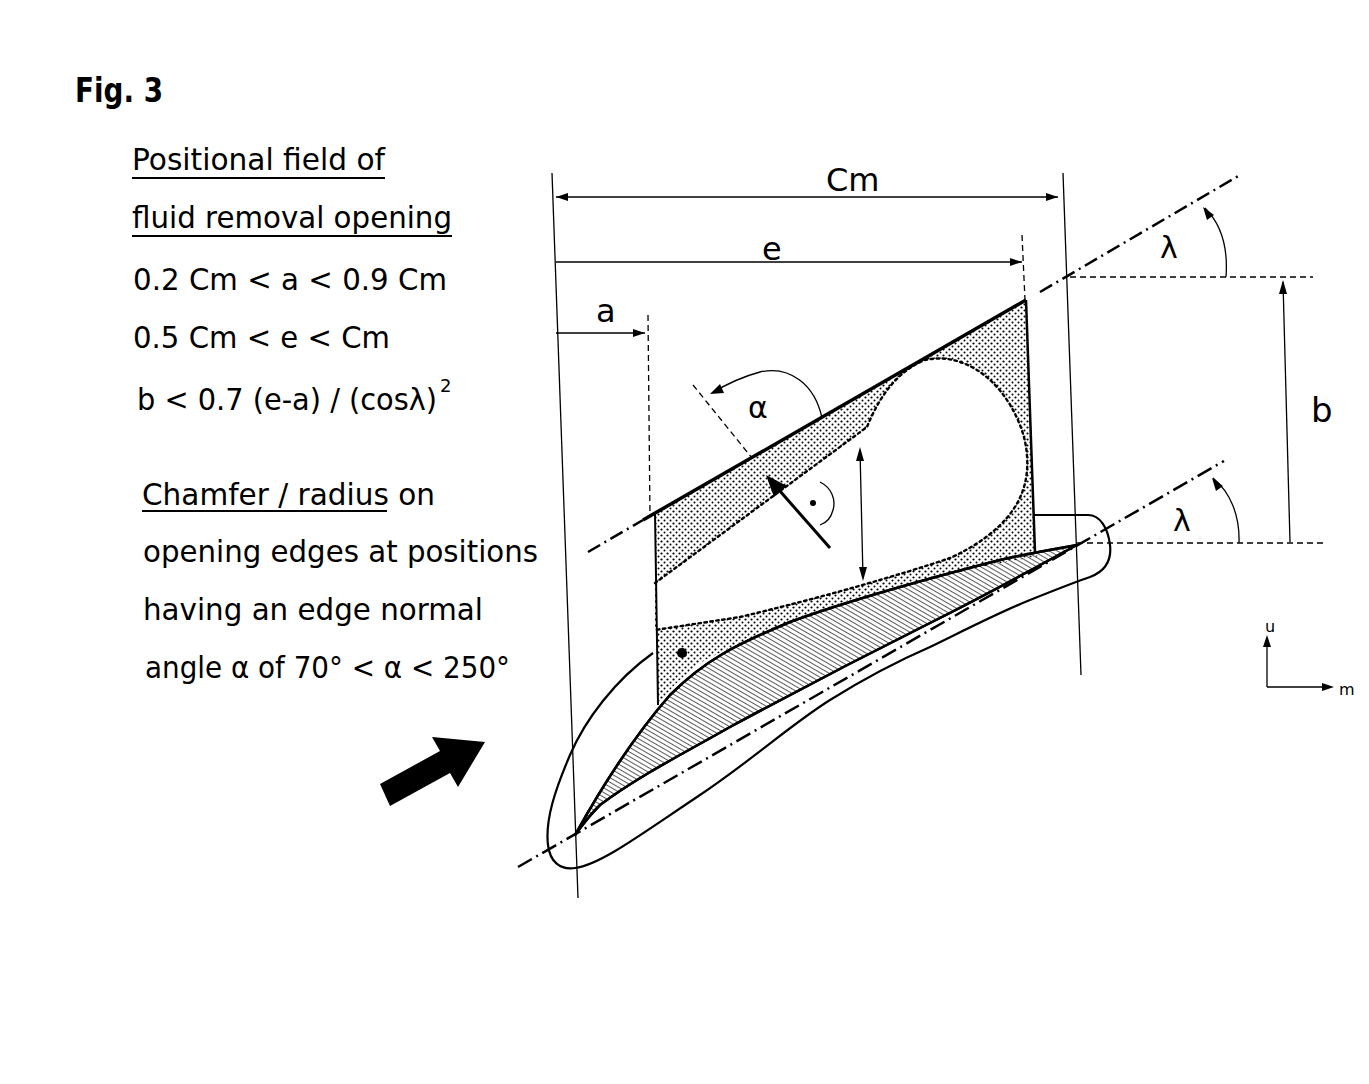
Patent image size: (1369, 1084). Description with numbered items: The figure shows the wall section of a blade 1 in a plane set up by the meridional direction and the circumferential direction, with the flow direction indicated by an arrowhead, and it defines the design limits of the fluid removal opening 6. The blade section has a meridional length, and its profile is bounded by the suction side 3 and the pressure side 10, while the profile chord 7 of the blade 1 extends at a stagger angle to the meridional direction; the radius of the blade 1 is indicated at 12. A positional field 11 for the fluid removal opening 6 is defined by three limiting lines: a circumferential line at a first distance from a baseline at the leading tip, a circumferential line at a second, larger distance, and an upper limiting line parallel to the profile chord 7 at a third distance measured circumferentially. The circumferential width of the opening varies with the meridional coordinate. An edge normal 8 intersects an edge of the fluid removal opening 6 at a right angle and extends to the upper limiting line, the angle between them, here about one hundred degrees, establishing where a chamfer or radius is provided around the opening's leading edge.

The blade 1 is at (613, 787).
The suction side of blade 3 is at (902, 601).
The fluid removal opening 6 is at (932, 430).
The profile chord of blade 7 is at (530, 870).
The edge normal 8 is at (817, 543).
The pressure side of blade 10 is at (787, 698).
The positional field of fluid removal opening 11 is at (720, 720).
The radius of blade 12 is at (622, 820).